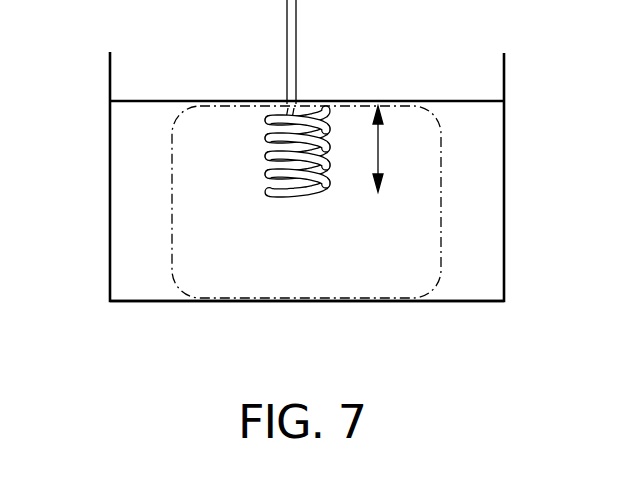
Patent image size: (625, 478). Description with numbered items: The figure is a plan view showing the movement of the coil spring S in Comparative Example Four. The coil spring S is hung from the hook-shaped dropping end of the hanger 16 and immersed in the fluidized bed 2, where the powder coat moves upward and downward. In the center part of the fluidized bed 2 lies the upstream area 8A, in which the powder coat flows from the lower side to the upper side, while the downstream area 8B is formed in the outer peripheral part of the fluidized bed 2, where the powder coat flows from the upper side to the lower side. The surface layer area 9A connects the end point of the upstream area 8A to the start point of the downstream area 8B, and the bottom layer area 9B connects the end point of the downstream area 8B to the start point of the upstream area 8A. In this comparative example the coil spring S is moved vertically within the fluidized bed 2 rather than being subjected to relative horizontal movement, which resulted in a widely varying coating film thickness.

The hanger 16 is at (285, 31).
The fluidized bed 2 is at (227, 138).
The upstream area 8A is at (349, 170).
The surface layer area 9A is at (407, 101).
The downstream area 8B is at (463, 188).
The bottom layer area 9B is at (387, 303).
The coil spring S is at (303, 191).